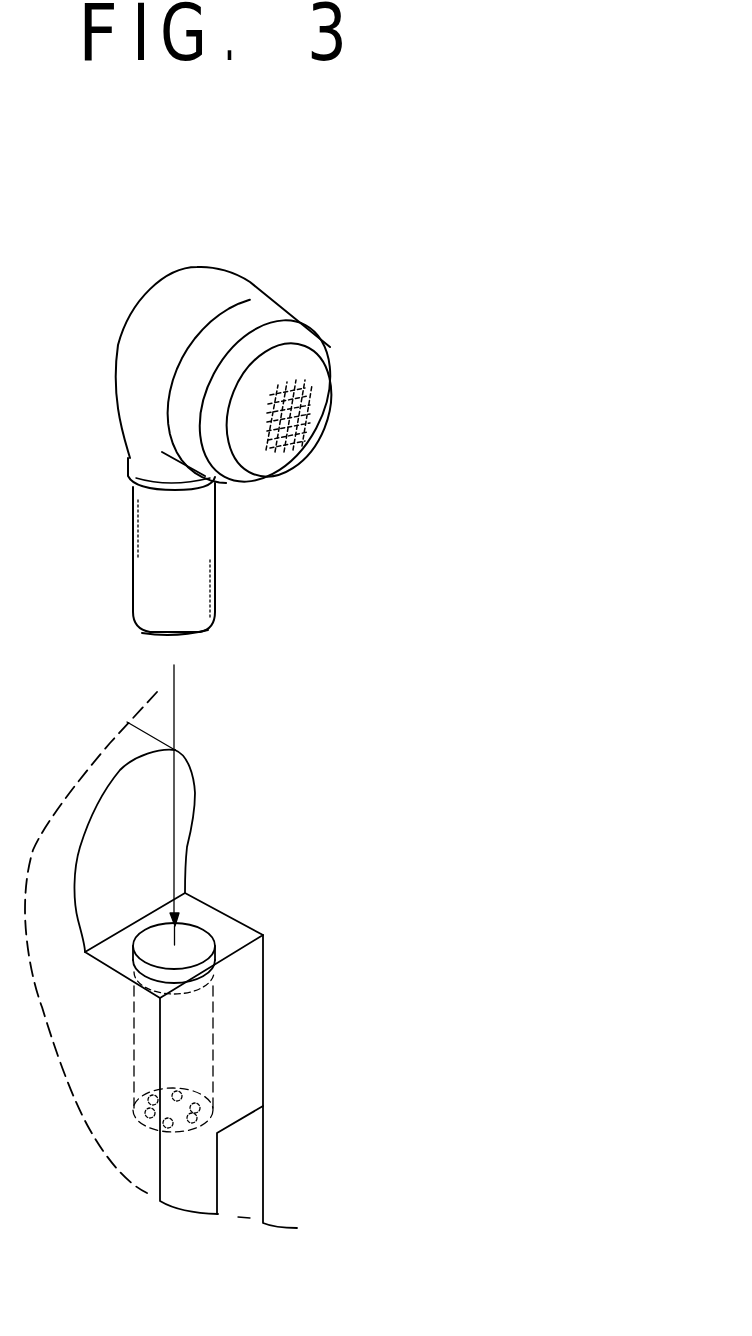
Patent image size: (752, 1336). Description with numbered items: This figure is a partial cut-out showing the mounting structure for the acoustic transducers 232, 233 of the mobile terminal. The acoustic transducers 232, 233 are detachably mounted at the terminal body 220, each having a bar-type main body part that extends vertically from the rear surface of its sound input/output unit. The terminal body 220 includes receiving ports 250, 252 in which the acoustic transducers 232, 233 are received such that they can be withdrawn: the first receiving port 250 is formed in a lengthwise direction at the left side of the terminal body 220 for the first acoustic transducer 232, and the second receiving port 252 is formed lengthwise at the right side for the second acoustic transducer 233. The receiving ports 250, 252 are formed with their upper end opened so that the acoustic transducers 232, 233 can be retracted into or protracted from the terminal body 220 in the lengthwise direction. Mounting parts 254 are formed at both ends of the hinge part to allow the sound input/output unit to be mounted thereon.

The first acoustic transducer 232 is at (358, 451).
The second acoustic transducer 233 is at (360, 350).
The first receiving port 250 is at (305, 908).
The second receiving port 252 is at (200, 940).
The mounting part 254 is at (235, 937).
The terminal body 220 is at (270, 1091).